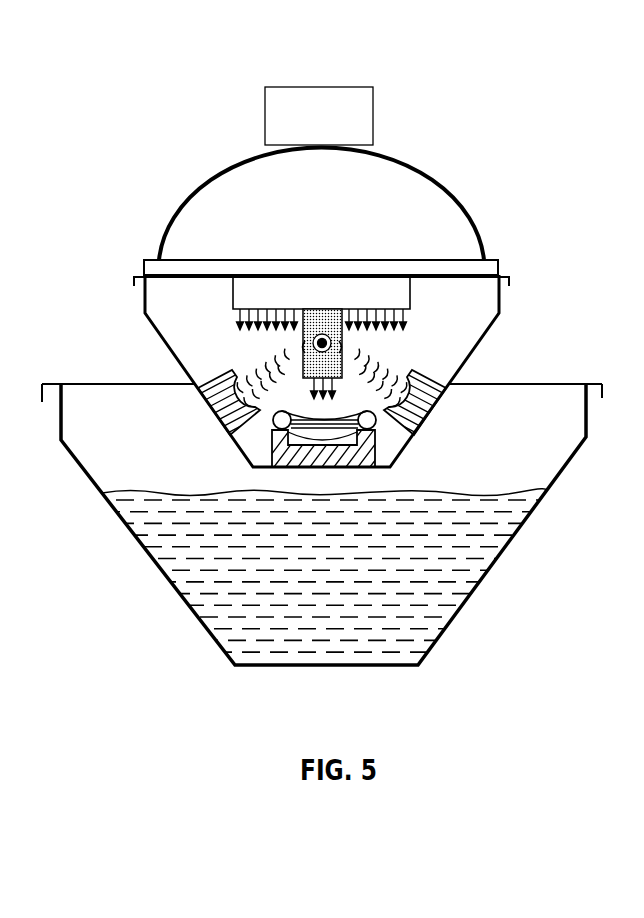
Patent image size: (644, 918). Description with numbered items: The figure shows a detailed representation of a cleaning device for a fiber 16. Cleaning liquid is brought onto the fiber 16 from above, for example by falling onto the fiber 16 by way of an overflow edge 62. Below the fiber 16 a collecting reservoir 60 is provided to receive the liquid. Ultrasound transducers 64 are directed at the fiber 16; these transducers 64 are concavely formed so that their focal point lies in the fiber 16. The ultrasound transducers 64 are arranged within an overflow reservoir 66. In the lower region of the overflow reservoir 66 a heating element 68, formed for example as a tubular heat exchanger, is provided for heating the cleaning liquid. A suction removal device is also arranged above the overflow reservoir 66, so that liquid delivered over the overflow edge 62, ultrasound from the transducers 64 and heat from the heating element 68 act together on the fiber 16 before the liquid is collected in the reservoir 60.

The fiber 16 is at (331, 341).
The collecting reservoir 60 is at (495, 558).
The overflow edge 62 is at (262, 303).
The ultrasound transducers 64 is at (212, 372).
The overflow reservoir 66 is at (442, 330).
The heating element 68 is at (273, 423).